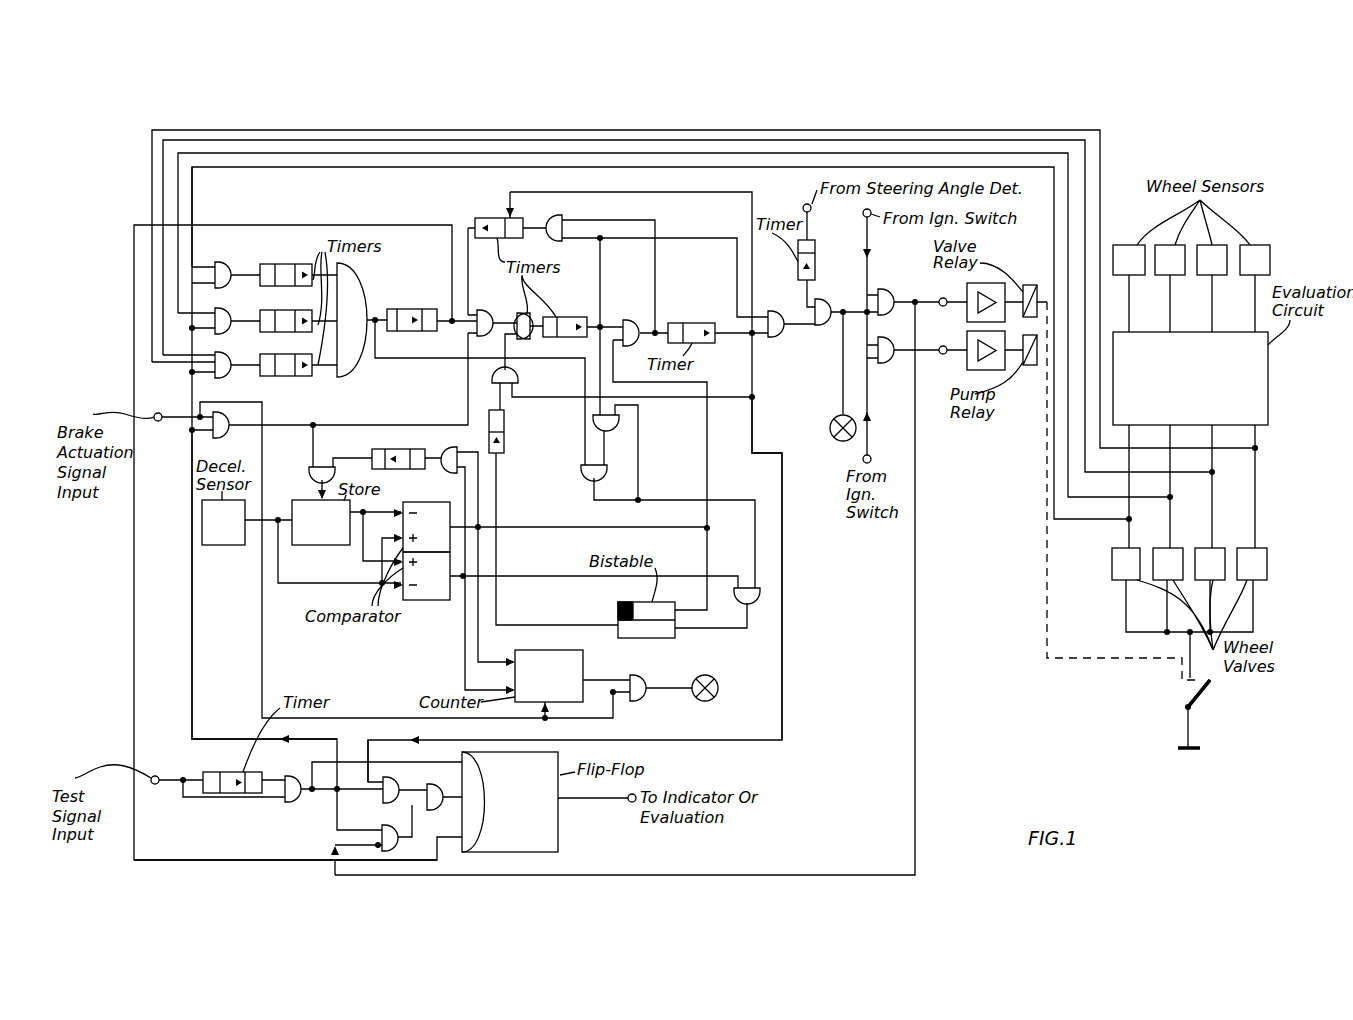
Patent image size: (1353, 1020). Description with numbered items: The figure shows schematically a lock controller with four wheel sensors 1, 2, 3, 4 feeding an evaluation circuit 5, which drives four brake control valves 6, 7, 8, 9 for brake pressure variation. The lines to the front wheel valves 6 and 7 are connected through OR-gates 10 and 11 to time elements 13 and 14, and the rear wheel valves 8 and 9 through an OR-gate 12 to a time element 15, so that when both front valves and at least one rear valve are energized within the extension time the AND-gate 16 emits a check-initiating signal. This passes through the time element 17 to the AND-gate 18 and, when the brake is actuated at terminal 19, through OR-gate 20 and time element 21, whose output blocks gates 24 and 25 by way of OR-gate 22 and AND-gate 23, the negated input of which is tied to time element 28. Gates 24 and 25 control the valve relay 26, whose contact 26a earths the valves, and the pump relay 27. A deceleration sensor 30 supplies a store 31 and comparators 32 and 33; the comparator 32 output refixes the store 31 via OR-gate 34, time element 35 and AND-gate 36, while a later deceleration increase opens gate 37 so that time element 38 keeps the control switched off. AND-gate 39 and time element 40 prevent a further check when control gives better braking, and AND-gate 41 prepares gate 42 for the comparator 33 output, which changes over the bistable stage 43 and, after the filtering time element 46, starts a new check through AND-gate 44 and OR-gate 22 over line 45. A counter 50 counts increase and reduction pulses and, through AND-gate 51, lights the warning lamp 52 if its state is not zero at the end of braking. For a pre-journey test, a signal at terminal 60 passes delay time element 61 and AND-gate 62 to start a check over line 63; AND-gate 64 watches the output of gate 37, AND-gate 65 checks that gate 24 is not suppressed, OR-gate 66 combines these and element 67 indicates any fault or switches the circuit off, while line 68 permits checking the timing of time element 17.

The wheel sensor 1 is at (1129, 260).
The wheel sensor 2 is at (1170, 260).
The wheel sensor 3 is at (1212, 260).
The wheel sensor 4 is at (1255, 260).
The evaluation circuit 5 is at (1190, 378).
The brake control valve 6 is at (1126, 564).
The brake control valve 7 is at (1168, 564).
The brake control valve 8 is at (1210, 564).
The brake control valve 9 is at (1252, 564).
The OR-gate 10 is at (227, 263).
The OR-gate 11 is at (228, 318).
The OR-gate 12 is at (228, 360).
The time element 13 is at (281, 264).
The time element 14 is at (308, 318).
The time element 15 is at (283, 376).
The AND-gate 16 is at (355, 360).
The time element 17 is at (405, 309).
The AND-gate 18 is at (489, 310).
The terminal 19 is at (160, 413).
The OR-gate 20 is at (527, 313).
The time element 21 is at (562, 317).
The OR-gate 22 is at (771, 338).
The AND-gate 23 is at (824, 326).
The gate 24 is at (889, 289).
The gate 25 is at (888, 364).
The valve relay 26 is at (1030, 285).
The contact 26a is at (1186, 701).
The pump relay 27 is at (1030, 366).
The time element 28 is at (816, 263).
The deceleration sensor 30 is at (230, 546).
The store 31 is at (325, 546).
The comparator 32 is at (420, 497).
The comparator 33 is at (428, 600).
The OR-gate 34 is at (443, 447).
The time element 35 is at (398, 449).
The AND-gate 36 is at (306, 470).
The gate 37 is at (630, 320).
The time element 38 is at (691, 323).
The AND-gate 39 is at (564, 221).
The time element 40 is at (480, 216).
The AND-gate 41 is at (584, 478).
The gate 42 is at (752, 602).
The bistable stage 43 is at (618, 612).
The AND-gate 44 is at (518, 377).
The line 45 is at (724, 407).
The time element 46 is at (504, 433).
The counter 50 is at (550, 650).
The AND-gate 51 is at (658, 674).
The warning lamp 52 is at (718, 680).
The terminal 60 is at (155, 776).
The delay time element 61 is at (232, 772).
The AND-gate 62 is at (294, 803).
The line 63 is at (190, 676).
The AND-gate 64 is at (395, 776).
The AND-gate 65 is at (382, 830).
The OR-gate 66 is at (438, 778).
The element 67 is at (548, 817).
The line 68 is at (180, 860).